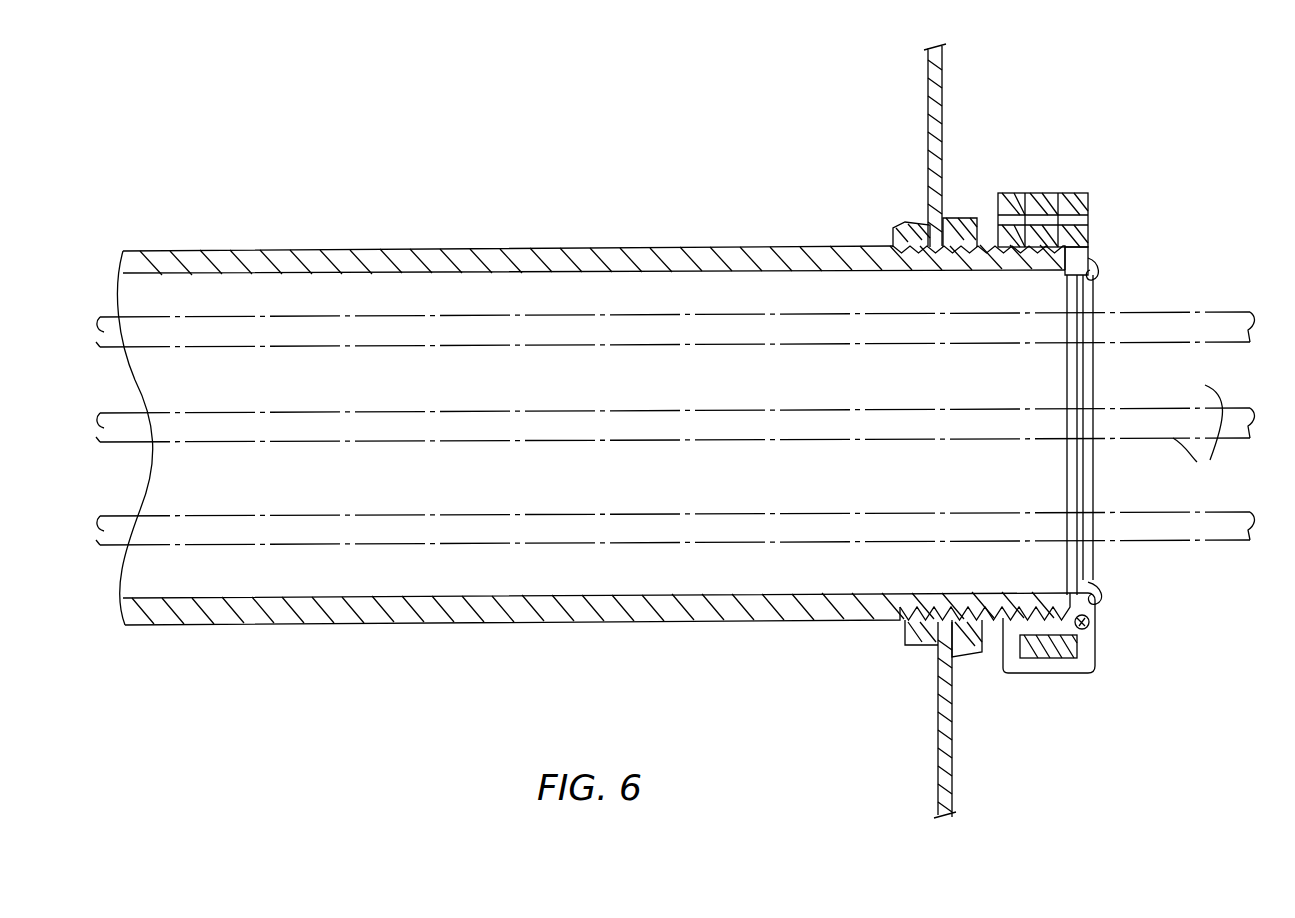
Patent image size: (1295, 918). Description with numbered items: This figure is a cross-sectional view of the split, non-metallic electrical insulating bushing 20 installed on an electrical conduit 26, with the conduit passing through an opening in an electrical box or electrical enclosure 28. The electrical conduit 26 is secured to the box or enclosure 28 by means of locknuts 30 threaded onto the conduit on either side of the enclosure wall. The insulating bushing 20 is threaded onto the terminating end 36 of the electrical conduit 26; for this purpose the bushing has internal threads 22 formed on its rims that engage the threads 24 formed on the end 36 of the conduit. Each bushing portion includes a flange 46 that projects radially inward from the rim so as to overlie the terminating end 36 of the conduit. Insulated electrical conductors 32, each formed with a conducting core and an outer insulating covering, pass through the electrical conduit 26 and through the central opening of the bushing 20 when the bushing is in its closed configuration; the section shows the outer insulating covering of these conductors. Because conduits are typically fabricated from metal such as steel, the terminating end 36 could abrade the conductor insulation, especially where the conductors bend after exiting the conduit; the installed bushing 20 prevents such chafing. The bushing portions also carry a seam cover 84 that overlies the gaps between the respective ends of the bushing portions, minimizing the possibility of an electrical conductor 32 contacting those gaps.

The split non-metallic electrical insulating bushing 20 is at (1110, 620).
The internal threads 22 is at (1033, 608).
The threads 24 is at (1032, 272).
The electrical conduit 26 is at (513, 625).
The electrical box or electrical enclosure 28 is at (938, 752).
The locknuts 30 is at (900, 215).
The insulated electrical conductors 32 is at (1150, 512).
The terminating end of the electrical conduit 36 is at (1066, 572).
The flange 46 is at (1088, 232).
The seam cover 84 is at (1098, 268).